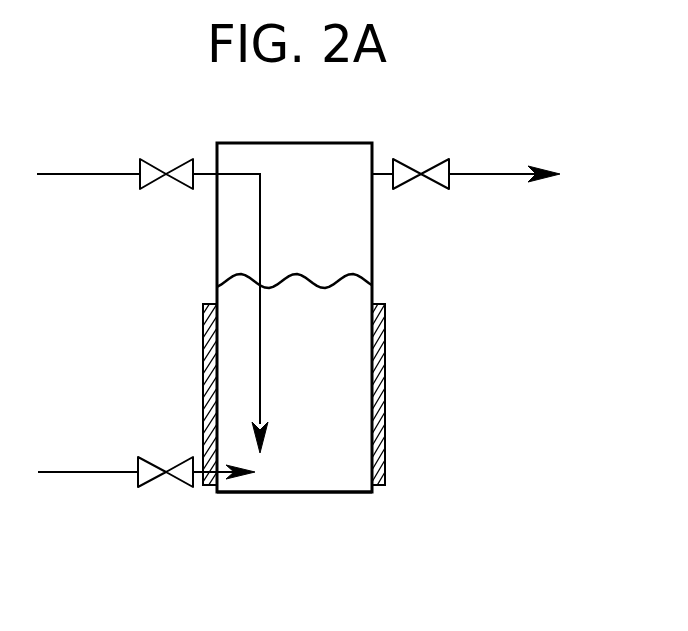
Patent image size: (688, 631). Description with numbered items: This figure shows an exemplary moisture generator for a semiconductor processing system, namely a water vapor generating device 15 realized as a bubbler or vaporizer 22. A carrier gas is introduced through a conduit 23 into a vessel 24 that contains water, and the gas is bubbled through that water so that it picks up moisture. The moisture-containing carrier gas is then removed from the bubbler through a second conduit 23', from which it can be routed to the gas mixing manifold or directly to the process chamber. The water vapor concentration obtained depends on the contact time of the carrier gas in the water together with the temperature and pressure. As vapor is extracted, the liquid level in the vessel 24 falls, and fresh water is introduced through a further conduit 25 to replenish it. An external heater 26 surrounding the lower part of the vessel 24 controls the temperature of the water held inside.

The water vapor generating device 15 is at (237, 517).
The bubbler or vaporizer 22 is at (435, 365).
The conduit 23 is at (152, 273).
The conduit 23' is at (466, 141).
The vessel 24 is at (372, 223).
The conduit 25 is at (72, 470).
The external heater 26 is at (385, 446).